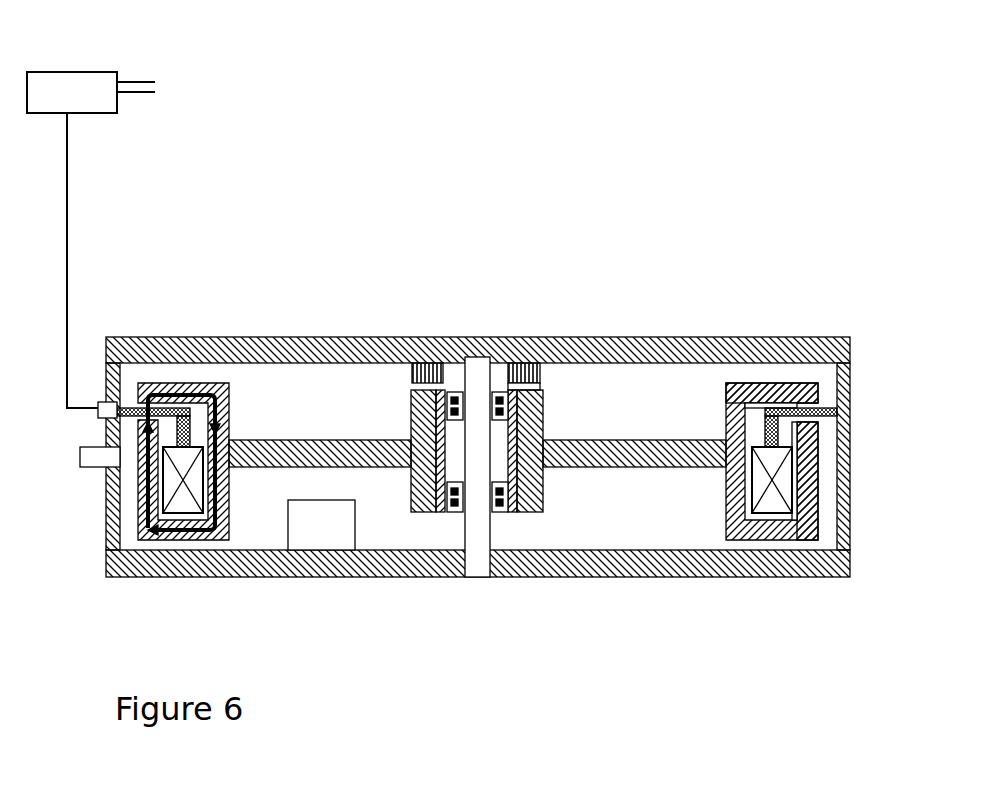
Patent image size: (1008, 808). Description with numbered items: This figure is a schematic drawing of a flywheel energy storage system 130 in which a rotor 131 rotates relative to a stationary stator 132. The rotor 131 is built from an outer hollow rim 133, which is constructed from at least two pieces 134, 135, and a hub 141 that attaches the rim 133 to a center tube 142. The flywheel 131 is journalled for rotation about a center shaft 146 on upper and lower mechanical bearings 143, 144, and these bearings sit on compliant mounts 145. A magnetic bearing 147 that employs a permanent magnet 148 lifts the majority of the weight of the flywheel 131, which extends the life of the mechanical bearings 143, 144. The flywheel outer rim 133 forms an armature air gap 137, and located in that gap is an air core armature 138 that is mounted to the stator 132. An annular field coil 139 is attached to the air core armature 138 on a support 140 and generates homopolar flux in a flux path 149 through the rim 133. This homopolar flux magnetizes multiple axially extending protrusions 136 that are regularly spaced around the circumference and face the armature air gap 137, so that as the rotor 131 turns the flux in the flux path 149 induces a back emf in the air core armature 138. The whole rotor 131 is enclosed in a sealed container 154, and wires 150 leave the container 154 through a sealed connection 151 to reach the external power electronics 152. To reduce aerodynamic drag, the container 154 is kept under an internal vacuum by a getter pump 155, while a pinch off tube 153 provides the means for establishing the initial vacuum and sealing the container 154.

The energy storage system 130 is at (266, 40).
The rotor 131 is at (303, 425).
The stator 132 is at (688, 328).
The outer hollow rim 133 is at (717, 405).
The rim piece 134 is at (773, 383).
The rim piece 135 is at (818, 486).
The axially extending protrusions 136 is at (818, 432).
The armature air gap 137 is at (828, 397).
The air core armature 138 is at (832, 418).
The annular field coil 139 is at (752, 493).
The support 140 is at (765, 432).
The hub 141 is at (625, 440).
The center tube 142 is at (544, 490).
The upper mechanical bearing 143 is at (493, 390).
The lower mechanical bearing 144 is at (491, 514).
The compliant mounts 145 is at (444, 514).
The center shaft 146 is at (466, 538).
The magnetic bearing 147 is at (550, 384).
The permanent magnet 148 is at (412, 374).
The flux path 149 is at (228, 484).
The wires 150 is at (67, 288).
The sealed connection 151 is at (96, 414).
The external power electronics 152 is at (94, 122).
The pinch off tube 153 is at (82, 468).
The sealed container 154 is at (265, 545).
The getter pump 155 is at (357, 548).